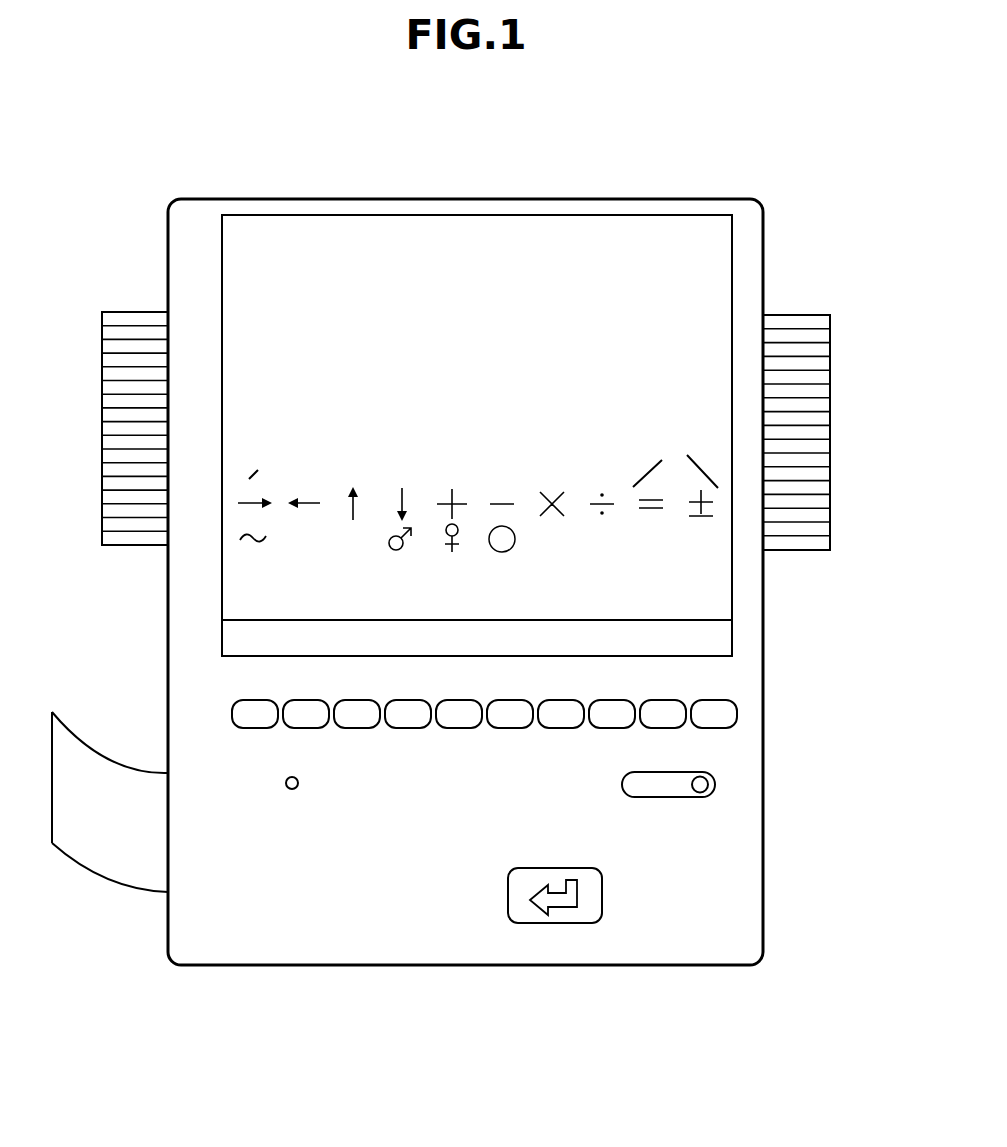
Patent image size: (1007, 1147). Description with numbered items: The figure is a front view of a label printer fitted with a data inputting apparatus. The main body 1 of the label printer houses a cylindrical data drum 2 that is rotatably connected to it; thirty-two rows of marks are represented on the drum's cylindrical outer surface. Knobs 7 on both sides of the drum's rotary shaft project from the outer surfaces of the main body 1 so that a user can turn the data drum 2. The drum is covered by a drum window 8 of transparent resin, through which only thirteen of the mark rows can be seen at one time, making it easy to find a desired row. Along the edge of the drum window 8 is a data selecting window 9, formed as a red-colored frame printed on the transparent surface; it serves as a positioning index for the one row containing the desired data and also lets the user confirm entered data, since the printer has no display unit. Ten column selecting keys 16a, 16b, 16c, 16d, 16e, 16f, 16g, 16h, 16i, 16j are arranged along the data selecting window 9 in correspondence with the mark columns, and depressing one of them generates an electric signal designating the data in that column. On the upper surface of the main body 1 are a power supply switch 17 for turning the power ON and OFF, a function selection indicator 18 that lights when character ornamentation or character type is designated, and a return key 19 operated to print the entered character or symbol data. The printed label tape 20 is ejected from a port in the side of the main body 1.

The main body 1 is at (582, 196).
The data drum 2 is at (718, 283).
The knobs 7 is at (112, 398).
The drum window 8 is at (216, 280).
The data selecting window 9 is at (232, 630).
The column selecting key 16a is at (248, 699).
The column selecting key 16b is at (299, 699).
The column selecting key 16c is at (350, 699).
The column selecting key 16d is at (401, 699).
The column selecting key 16e is at (452, 699).
The column selecting key 16f is at (503, 699).
The column selecting key 16g is at (554, 699).
The column selecting key 16h is at (605, 699).
The column selecting key 16i is at (656, 699).
The column selecting key 16j is at (707, 699).
The power supply switch 17 is at (680, 775).
The function selection indicator 18 is at (288, 778).
The return key 19 is at (550, 925).
The label tape 20 is at (108, 886).